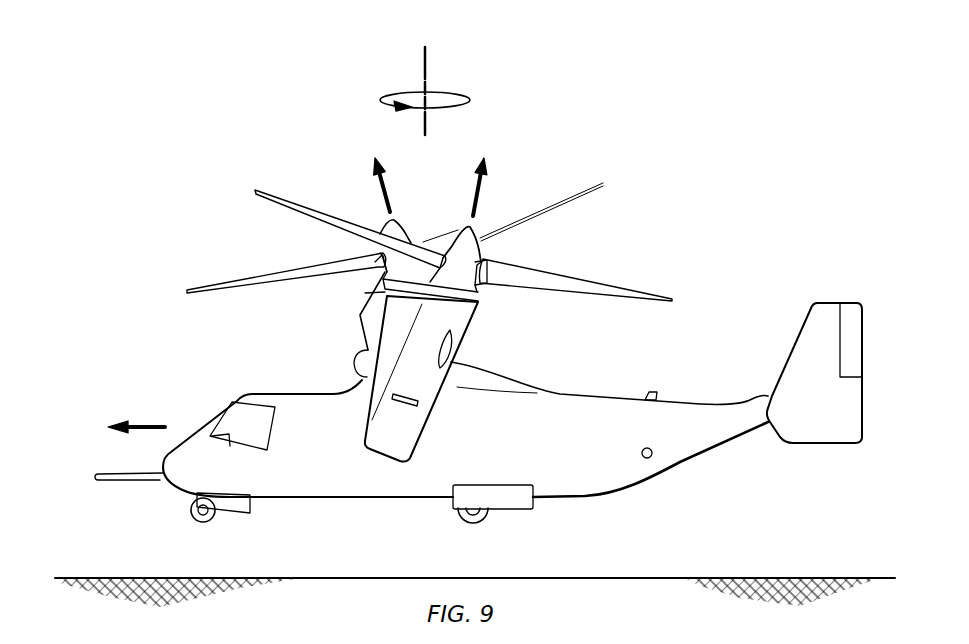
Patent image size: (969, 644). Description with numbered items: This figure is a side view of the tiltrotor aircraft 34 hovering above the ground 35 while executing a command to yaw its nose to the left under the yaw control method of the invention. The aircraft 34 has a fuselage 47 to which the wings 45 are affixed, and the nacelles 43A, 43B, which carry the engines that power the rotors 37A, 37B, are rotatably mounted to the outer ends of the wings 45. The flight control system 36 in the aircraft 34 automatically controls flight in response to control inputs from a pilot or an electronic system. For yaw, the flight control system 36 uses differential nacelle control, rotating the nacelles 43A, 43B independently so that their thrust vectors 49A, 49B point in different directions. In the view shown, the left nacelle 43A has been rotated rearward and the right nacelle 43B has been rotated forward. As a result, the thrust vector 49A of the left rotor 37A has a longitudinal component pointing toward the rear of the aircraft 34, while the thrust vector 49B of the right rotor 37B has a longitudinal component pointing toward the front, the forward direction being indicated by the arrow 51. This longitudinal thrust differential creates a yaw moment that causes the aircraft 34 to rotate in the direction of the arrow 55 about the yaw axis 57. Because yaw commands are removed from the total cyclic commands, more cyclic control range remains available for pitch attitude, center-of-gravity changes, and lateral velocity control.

The tiltrotor aircraft 34 is at (738, 188).
The ground 35 is at (776, 577).
The flight control system 36 is at (213, 436).
The left rotor 37A is at (498, 253).
The right rotor 37B is at (374, 214).
The left nacelle 43A is at (478, 331).
The right nacelle 43B is at (357, 322).
The wing 45 is at (362, 377).
The fuselage 47 is at (634, 485).
The thrust vector of left rotor 49A is at (483, 202).
The thrust vector of right rotor 49B is at (386, 196).
The arrow 51 is at (148, 424).
The arrow 55 is at (452, 93).
The yaw axis 57 is at (423, 62).